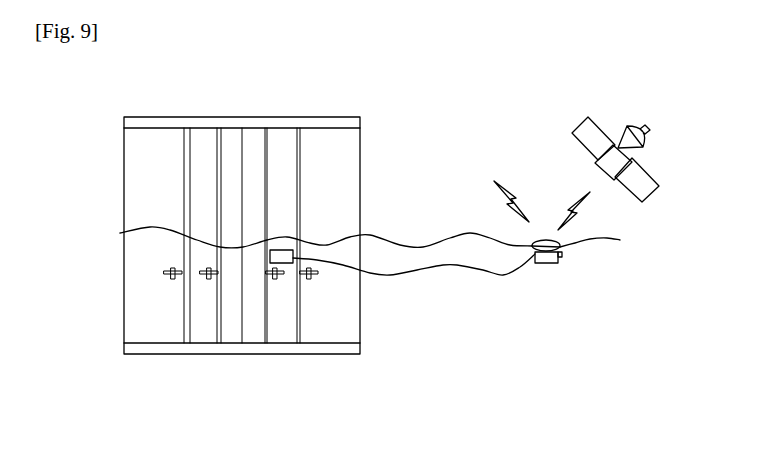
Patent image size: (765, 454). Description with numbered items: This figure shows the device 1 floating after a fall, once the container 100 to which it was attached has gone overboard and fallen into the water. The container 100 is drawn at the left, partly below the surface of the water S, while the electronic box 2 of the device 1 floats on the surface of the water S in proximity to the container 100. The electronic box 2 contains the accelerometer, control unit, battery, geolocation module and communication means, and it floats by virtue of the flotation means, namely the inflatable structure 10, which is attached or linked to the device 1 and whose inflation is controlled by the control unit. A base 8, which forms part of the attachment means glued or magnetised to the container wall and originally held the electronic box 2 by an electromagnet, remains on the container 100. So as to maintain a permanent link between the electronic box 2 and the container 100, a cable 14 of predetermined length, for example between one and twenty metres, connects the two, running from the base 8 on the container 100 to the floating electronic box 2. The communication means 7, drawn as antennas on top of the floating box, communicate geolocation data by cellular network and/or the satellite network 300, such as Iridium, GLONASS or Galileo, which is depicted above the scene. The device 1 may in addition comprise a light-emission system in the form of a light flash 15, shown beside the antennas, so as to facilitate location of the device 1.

The device 1 is at (549, 282).
The electronic box 2 is at (547, 263).
The communication means 7 is at (543, 240).
The base 8 is at (280, 250).
The inflatable structure 10 is at (532, 244).
The cable 14 is at (412, 268).
The light flash 15 is at (561, 247).
The container 100 is at (168, 132).
The satellite network 300 is at (615, 147).
The surface of the water S is at (379, 237).